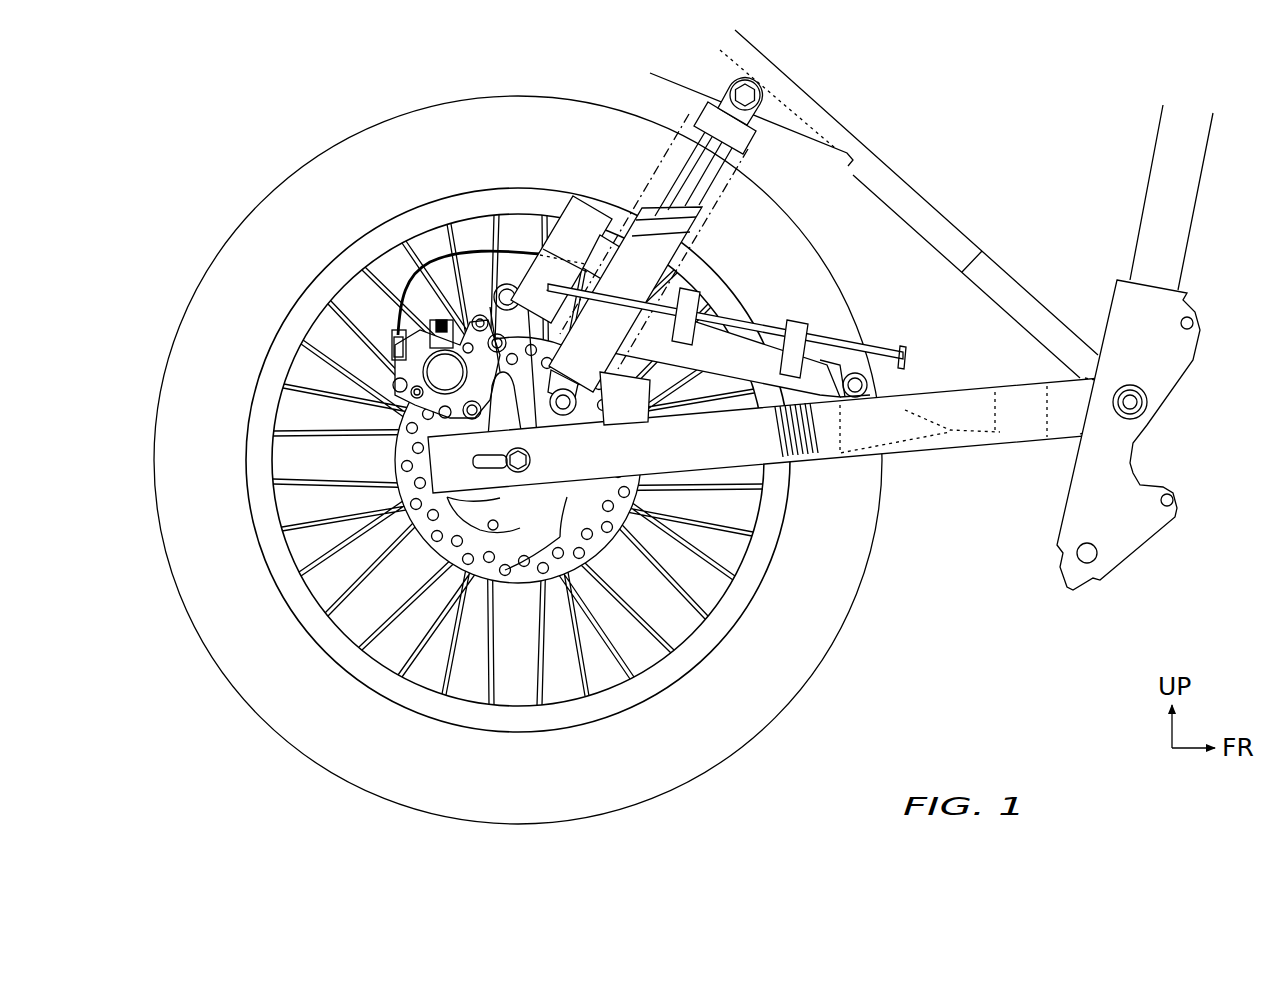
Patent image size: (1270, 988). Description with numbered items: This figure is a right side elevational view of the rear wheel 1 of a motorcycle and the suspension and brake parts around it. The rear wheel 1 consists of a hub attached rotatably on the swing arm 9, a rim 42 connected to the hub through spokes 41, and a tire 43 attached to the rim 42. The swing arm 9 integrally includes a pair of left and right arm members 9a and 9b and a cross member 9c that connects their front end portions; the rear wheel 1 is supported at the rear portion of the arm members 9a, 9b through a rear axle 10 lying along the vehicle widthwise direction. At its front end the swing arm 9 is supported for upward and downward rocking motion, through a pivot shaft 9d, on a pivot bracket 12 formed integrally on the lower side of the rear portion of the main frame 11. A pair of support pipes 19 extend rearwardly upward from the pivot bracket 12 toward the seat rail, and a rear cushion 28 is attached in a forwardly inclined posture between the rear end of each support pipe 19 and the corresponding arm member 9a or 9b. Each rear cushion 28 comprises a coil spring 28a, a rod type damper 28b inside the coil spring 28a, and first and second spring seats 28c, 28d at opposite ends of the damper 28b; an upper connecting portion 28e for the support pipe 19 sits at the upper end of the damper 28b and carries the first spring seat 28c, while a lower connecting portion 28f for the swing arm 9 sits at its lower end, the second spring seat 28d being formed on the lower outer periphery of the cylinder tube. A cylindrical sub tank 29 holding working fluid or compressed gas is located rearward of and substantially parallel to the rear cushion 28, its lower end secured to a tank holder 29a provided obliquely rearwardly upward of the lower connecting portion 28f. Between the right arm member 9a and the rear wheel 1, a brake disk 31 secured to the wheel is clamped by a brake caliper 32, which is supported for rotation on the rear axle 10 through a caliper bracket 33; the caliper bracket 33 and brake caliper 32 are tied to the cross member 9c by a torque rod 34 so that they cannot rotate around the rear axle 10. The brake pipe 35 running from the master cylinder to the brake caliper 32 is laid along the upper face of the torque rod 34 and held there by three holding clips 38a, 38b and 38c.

The rear wheel 1 is at (519, 460).
The swing arm 9 is at (780, 479).
The right arm member 9a is at (822, 445).
The left arm member 9b is at (732, 452).
The cross member 9c is at (1014, 395).
The pivot shaft 9d is at (1135, 403).
The rear axle 10 is at (517, 468).
The main frame 11 is at (1186, 200).
The pivot bracket 12 is at (1173, 350).
The support pipe 19 is at (925, 212).
The rear cushion 28 is at (701, 252).
The coil spring 28a is at (650, 150).
The damper 28b is at (667, 212).
The first spring seat 28c is at (712, 102).
The second spring seat 28d is at (642, 390).
The upper connecting portion 28e is at (765, 92).
The lower connecting portion 28f is at (566, 415).
The sub tank 29 is at (568, 212).
The tank holder 29a is at (447, 267).
The brake disk 31 is at (603, 538).
The brake caliper 32 is at (383, 380).
The caliper bracket 33 is at (280, 462).
The torque rod 34 is at (736, 382).
The brake pipe 35 is at (737, 298).
The holding clip 38a is at (805, 322).
The holding clip 38b is at (690, 290).
The holding clip 38c is at (590, 245).
The spokes 41 is at (705, 650).
The rim 42 is at (770, 698).
The tire 43 is at (822, 657).